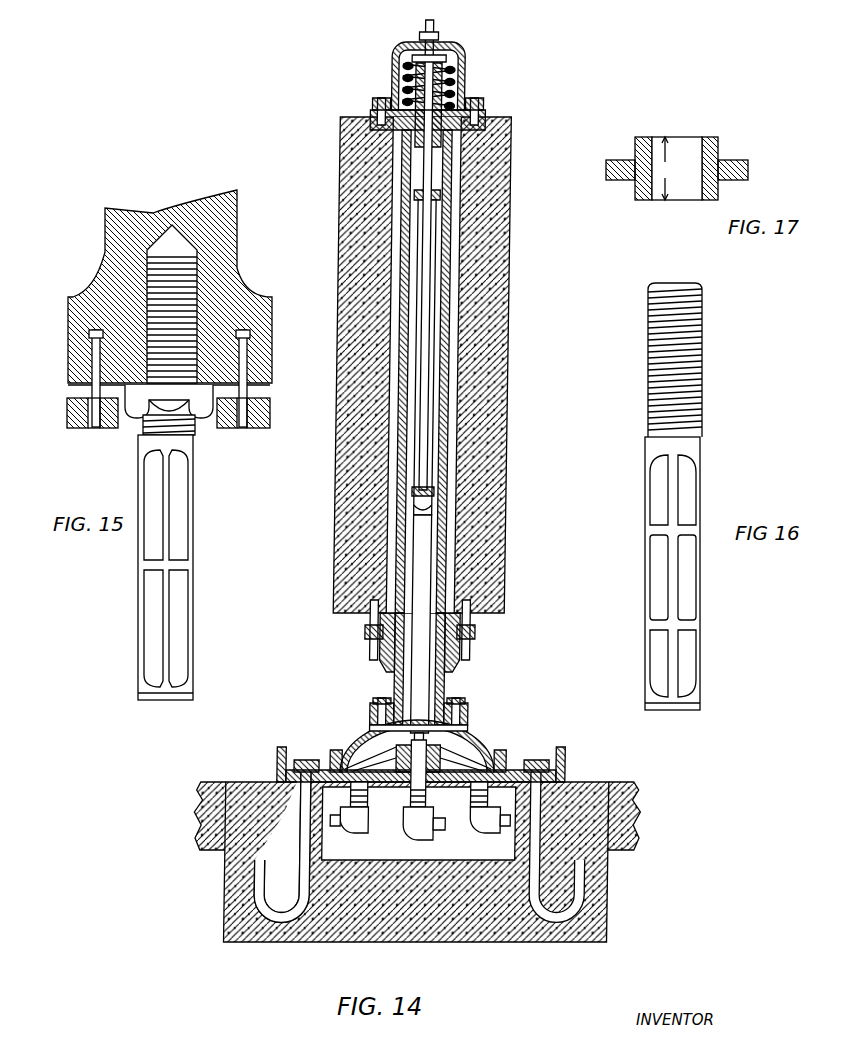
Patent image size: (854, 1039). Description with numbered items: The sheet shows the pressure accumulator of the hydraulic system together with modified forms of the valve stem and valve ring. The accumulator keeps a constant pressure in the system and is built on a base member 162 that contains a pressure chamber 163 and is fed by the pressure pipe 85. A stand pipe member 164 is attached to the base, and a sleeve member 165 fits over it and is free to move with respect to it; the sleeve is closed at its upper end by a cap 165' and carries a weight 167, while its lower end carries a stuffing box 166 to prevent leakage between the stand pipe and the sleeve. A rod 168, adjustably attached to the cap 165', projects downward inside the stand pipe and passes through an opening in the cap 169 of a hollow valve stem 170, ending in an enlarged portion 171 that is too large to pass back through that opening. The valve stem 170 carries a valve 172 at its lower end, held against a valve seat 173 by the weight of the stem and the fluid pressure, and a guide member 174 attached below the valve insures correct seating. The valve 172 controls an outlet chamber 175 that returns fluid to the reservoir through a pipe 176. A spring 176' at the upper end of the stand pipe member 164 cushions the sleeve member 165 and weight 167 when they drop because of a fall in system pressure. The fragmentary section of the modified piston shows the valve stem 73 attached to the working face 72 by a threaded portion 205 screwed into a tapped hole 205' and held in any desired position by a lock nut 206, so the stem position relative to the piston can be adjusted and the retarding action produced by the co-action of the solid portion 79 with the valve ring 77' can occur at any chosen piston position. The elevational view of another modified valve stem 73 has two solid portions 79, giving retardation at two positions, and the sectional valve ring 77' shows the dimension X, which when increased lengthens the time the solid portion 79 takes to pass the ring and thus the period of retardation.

In FIG. 14, the cap 165' is at (452, 73).
In FIG. 14, the spring 176' is at (459, 86).
In FIG. 14, the rod 168 is at (430, 172).
In FIG. 14, the cap 169 is at (443, 193).
In FIG. 14, the sleeve member 165 is at (477, 371).
In FIG. 14, the weight 167 is at (504, 290).
In FIG. 14, the enlarged portion 171 is at (439, 492).
In FIG. 14, the hollow valve stem 170 is at (438, 565).
In FIG. 14, the stuffing box 166 is at (472, 650).
In FIG. 14, the stand pipe member 164 is at (452, 688).
In FIG. 14, the base member 162 is at (474, 727).
In FIG. 14, the pressure chamber 163 is at (490, 757).
In FIG. 14, the valve 172 is at (418, 752).
In FIG. 14, the valve seat 173 is at (446, 752).
In FIG. 14, the guide member 174 is at (424, 758).
In FIG. 14, the outlet chamber 175 is at (438, 788).
In FIG. 14, the pipe 176 is at (454, 832).
In FIG. 14, the pressure pipe 85 is at (369, 829).
In FIG. 15, the tapped hole 205' is at (120, 303).
In FIG. 15, the threaded portion 205 is at (123, 317).
In FIG. 16, the threaded portion 205 is at (697, 360).
In FIG. 15, the working face 72 is at (68, 330).
In FIG. 15, the lock nut 206 is at (169, 401).
In FIG. 15, the valve stem 73 is at (188, 493).
In FIG. 16, the valve stem 73 is at (694, 501).
In FIG. 15, the solid portion 79 is at (144, 565).
In FIG. 16, the solid portion 79 is at (649, 530).
In FIG. 17, the valve ring 77' is at (684, 168).